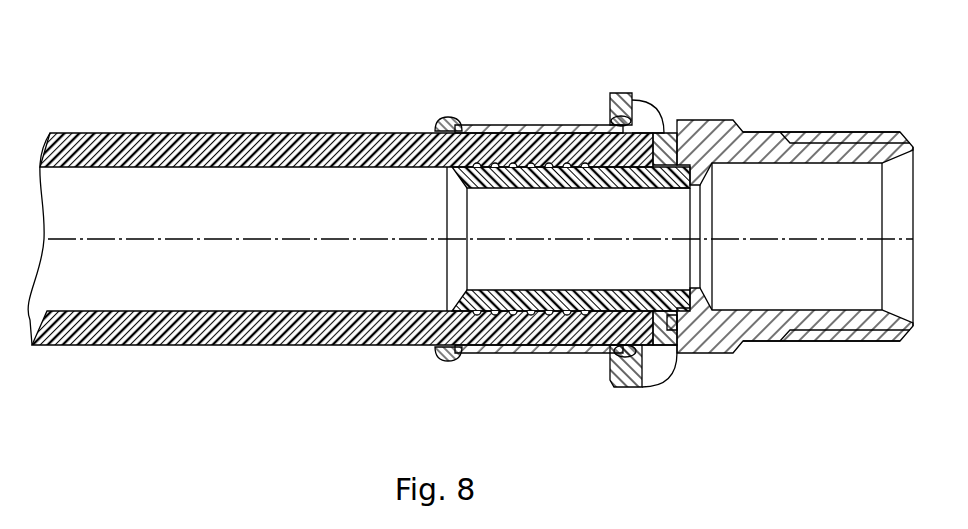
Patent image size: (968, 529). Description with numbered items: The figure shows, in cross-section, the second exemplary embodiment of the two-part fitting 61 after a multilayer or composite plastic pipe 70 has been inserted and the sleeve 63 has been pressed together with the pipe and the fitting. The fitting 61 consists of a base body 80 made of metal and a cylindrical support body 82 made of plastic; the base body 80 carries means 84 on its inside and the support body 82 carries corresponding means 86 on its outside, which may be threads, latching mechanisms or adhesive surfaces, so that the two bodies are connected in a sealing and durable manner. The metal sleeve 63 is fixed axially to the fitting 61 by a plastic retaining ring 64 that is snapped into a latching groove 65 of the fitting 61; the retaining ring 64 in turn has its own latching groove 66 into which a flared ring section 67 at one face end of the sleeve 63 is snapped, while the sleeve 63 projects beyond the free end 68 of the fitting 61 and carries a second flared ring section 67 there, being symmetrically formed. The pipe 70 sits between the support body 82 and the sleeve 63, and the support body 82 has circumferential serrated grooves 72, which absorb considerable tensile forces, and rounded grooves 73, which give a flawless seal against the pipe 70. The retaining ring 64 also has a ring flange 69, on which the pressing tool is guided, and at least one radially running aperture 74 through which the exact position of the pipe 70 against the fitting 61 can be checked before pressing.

The fitting 61 is at (776, 130).
The sleeve 63 is at (505, 353).
The retaining ring 64 is at (658, 373).
The latching groove 65 is at (674, 347).
The latching groove 66 is at (655, 120).
The ring section 67 is at (444, 357).
The free end 68 is at (447, 198).
The ring flange 69 is at (607, 97).
The plastic pipe 70 is at (188, 133).
The serrated grooves 72 is at (584, 311).
The rounded grooves 73 is at (505, 168).
The aperture 74 is at (655, 122).
The base body 80 is at (884, 108).
The support body 82 is at (430, 274).
The means 84 is at (631, 189).
The means 86 is at (678, 189).